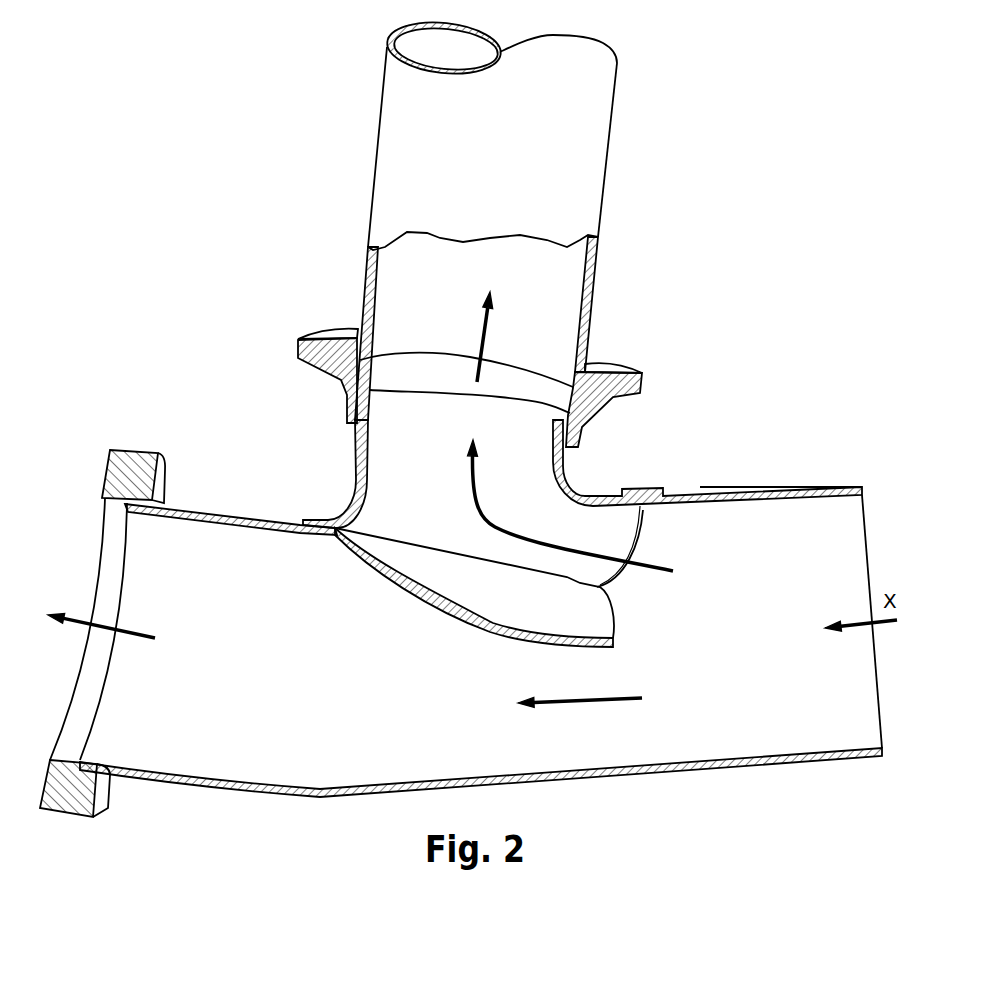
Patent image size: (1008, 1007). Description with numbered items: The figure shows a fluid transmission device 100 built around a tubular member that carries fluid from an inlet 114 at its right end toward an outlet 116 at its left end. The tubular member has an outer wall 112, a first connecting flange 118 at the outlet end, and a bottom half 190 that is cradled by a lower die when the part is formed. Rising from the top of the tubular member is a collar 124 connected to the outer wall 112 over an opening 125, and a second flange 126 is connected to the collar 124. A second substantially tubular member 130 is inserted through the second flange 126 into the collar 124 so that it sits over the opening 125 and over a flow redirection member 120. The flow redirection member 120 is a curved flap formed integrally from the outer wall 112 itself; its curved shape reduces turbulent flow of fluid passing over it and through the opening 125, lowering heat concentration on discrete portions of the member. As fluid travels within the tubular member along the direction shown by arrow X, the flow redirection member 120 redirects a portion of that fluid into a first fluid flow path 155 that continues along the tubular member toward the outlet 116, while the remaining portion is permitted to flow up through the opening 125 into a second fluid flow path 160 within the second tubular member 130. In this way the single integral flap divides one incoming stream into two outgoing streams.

The fluid transmission device 100 is at (743, 334).
The outer wall 112 is at (847, 487).
The inlet 114 is at (867, 510).
The outlet 116 is at (120, 542).
The first connecting flange 118 is at (133, 453).
The flow redirection member 120 is at (493, 627).
The collar 124 is at (356, 460).
The opening 125 is at (623, 553).
The second flange 126 is at (297, 352).
The second substantially tubular member 130 is at (603, 195).
The first fluid flow path 155 is at (141, 640).
The second fluid flow path 160 is at (482, 332).
The bottom half 190 is at (598, 777).